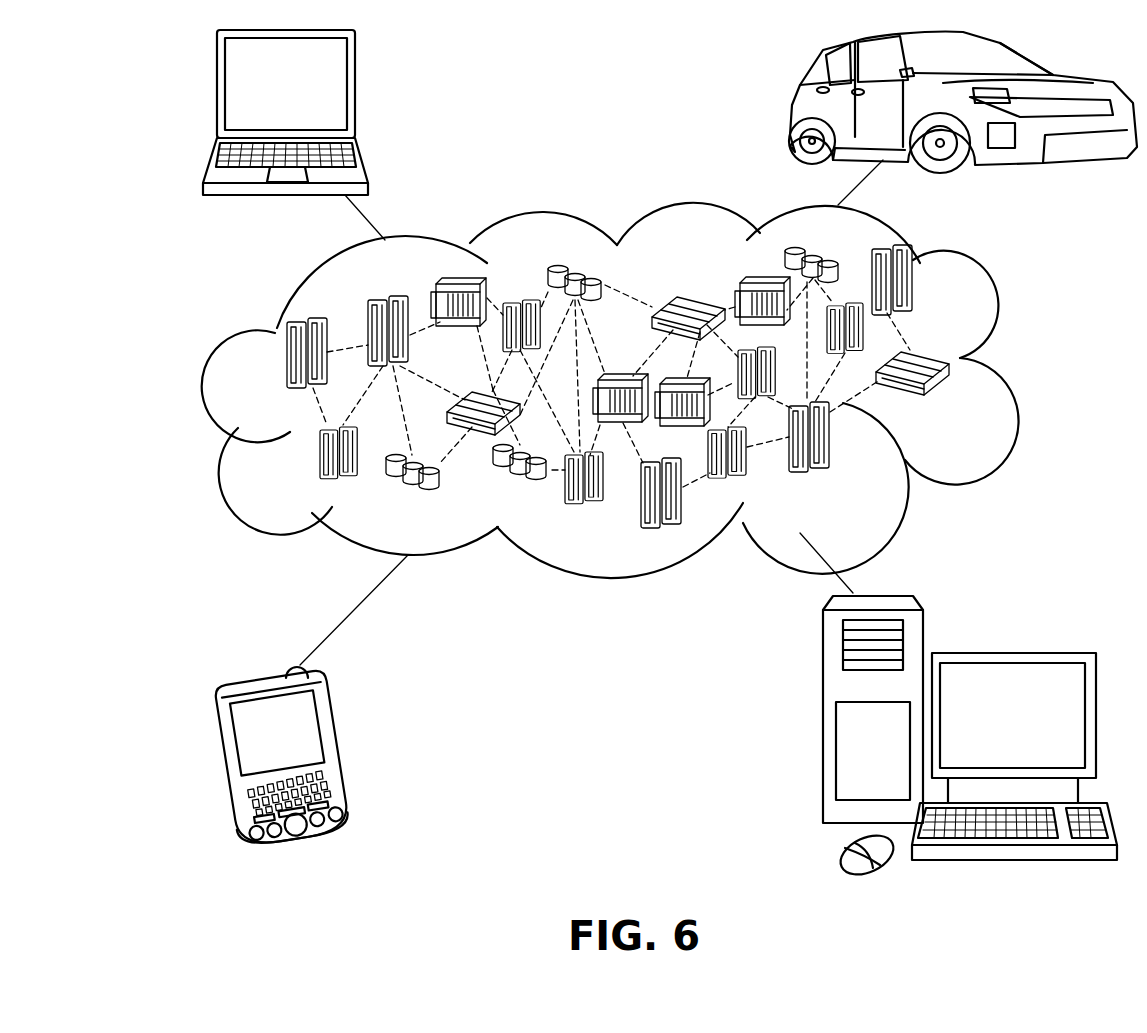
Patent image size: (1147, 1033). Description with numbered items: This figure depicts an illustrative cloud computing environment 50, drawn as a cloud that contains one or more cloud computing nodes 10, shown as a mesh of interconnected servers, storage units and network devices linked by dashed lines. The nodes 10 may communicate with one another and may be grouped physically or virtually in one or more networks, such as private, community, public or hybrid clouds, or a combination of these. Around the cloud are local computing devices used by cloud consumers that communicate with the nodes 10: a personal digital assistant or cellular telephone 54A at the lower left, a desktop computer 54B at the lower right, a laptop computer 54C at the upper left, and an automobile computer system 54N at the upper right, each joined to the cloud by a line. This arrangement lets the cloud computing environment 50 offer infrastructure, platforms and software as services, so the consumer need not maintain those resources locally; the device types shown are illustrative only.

The cloud computing nodes 10 is at (952, 394).
The cloud computing environment 50 is at (1013, 365).
The personal digital assistant or cellular telephone 54A is at (345, 748).
The desktop computer 54B is at (1010, 653).
The laptop computer 54C is at (355, 91).
The automobile computer system 54N is at (793, 108).